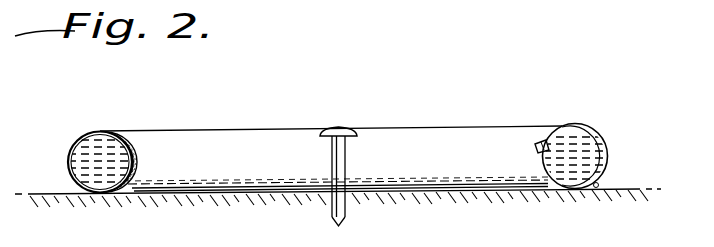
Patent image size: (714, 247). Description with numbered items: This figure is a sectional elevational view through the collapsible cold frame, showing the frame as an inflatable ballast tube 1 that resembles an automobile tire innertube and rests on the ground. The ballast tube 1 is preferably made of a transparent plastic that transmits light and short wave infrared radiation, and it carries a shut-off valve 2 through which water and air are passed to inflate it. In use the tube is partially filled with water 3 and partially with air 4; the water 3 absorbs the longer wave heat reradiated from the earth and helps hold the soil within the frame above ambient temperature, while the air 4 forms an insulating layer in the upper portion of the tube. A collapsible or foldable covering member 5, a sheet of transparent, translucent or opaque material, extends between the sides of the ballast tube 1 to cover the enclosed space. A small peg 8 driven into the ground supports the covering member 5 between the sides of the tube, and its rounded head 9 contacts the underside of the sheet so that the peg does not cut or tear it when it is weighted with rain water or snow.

The ballast tube 1 is at (528, 180).
The shut-off valve 2 is at (541, 142).
The water 3 is at (592, 153).
The air 4 is at (590, 128).
The covering member 5 is at (104, 131).
The peg 8 is at (345, 160).
The rounded head 9 is at (348, 129).